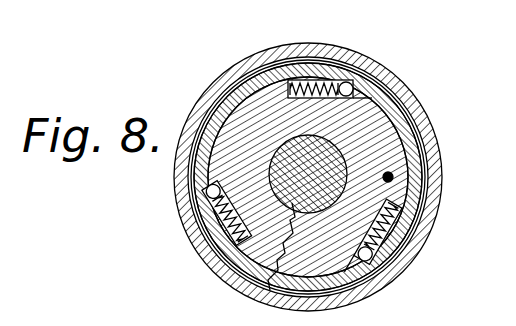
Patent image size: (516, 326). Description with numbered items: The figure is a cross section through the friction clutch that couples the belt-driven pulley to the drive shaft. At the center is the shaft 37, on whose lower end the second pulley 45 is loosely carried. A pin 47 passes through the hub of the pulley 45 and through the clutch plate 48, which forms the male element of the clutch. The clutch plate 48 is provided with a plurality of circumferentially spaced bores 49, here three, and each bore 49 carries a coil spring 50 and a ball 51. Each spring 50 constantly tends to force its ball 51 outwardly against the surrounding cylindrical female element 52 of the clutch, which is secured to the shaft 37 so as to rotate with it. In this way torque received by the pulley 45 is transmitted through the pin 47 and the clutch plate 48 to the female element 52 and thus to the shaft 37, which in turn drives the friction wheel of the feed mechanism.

The shaft 37 is at (264, 304).
The second pulley 45 is at (422, 113).
The pin 47 is at (394, 177).
The clutch plate 48 is at (223, 146).
The bores 49 is at (309, 79).
The coil spring 50 is at (322, 80).
The ball 51 is at (352, 88).
The cylindrical female element 52 is at (400, 237).